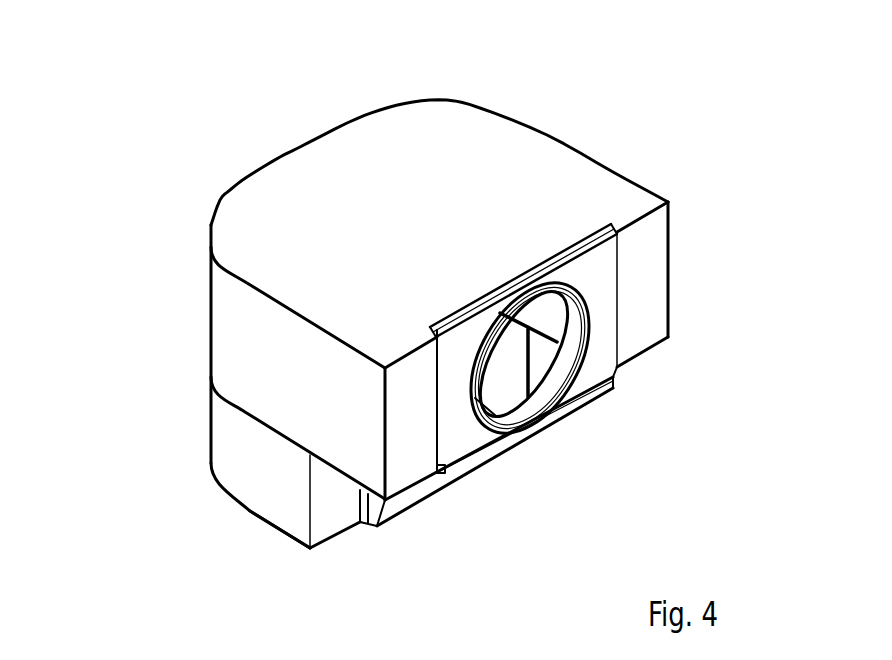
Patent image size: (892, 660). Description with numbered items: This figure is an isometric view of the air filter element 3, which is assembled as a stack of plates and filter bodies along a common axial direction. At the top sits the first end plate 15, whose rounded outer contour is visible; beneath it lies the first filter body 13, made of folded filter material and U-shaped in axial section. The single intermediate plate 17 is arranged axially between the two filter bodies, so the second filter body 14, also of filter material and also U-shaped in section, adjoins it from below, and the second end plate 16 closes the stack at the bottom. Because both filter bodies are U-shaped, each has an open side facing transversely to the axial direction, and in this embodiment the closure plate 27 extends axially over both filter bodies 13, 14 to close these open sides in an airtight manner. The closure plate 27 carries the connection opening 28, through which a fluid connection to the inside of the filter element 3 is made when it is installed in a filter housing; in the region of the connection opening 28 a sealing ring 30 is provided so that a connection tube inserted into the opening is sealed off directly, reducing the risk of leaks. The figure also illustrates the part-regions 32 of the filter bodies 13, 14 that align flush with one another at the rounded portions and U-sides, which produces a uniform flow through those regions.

The air filter element 3 is at (434, 320).
The first filter body 13 is at (306, 393).
The second filter body 14 is at (278, 488).
The first end plate 15 is at (413, 127).
The second end plate 16 is at (330, 540).
The intermediate plate 17 is at (420, 487).
The closure plate 27 is at (624, 298).
The connection opening 28 is at (547, 412).
The sealing ring 30 is at (557, 367).
The aligning part-regions 32 is at (298, 138).